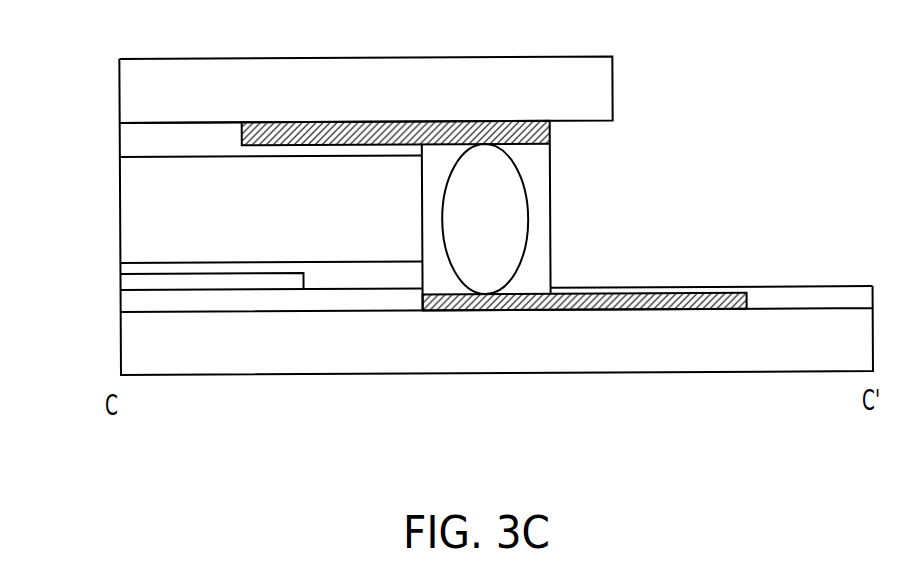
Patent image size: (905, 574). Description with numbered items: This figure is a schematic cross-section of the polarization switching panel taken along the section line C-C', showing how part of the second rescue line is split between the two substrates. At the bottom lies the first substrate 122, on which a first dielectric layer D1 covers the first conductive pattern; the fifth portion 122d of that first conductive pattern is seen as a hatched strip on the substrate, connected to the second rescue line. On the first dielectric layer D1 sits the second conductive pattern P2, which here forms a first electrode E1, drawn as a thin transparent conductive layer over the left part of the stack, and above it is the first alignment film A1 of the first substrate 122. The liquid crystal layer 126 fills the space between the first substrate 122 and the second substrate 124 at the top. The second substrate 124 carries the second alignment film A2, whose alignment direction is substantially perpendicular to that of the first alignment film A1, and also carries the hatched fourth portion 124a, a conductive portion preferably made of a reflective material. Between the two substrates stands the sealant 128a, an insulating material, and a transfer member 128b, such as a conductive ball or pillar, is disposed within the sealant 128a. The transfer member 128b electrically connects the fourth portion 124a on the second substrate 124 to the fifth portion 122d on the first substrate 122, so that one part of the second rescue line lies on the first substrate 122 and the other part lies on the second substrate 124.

The first substrate 122 is at (518, 355).
The fifth portion 122d is at (571, 296).
The second substrate 124 is at (382, 103).
The fourth portion 124a is at (312, 123).
The liquid crystal layer 126 is at (152, 208).
The sealant 128a is at (552, 187).
The transfer member 128b is at (506, 230).
The first alignment film A1 is at (133, 270).
The second alignment film A2 is at (133, 141).
The first dielectric layer D1 is at (330, 300).
The second conductive pattern P2 is at (211, 354).
The first electrode E1 is at (252, 283).